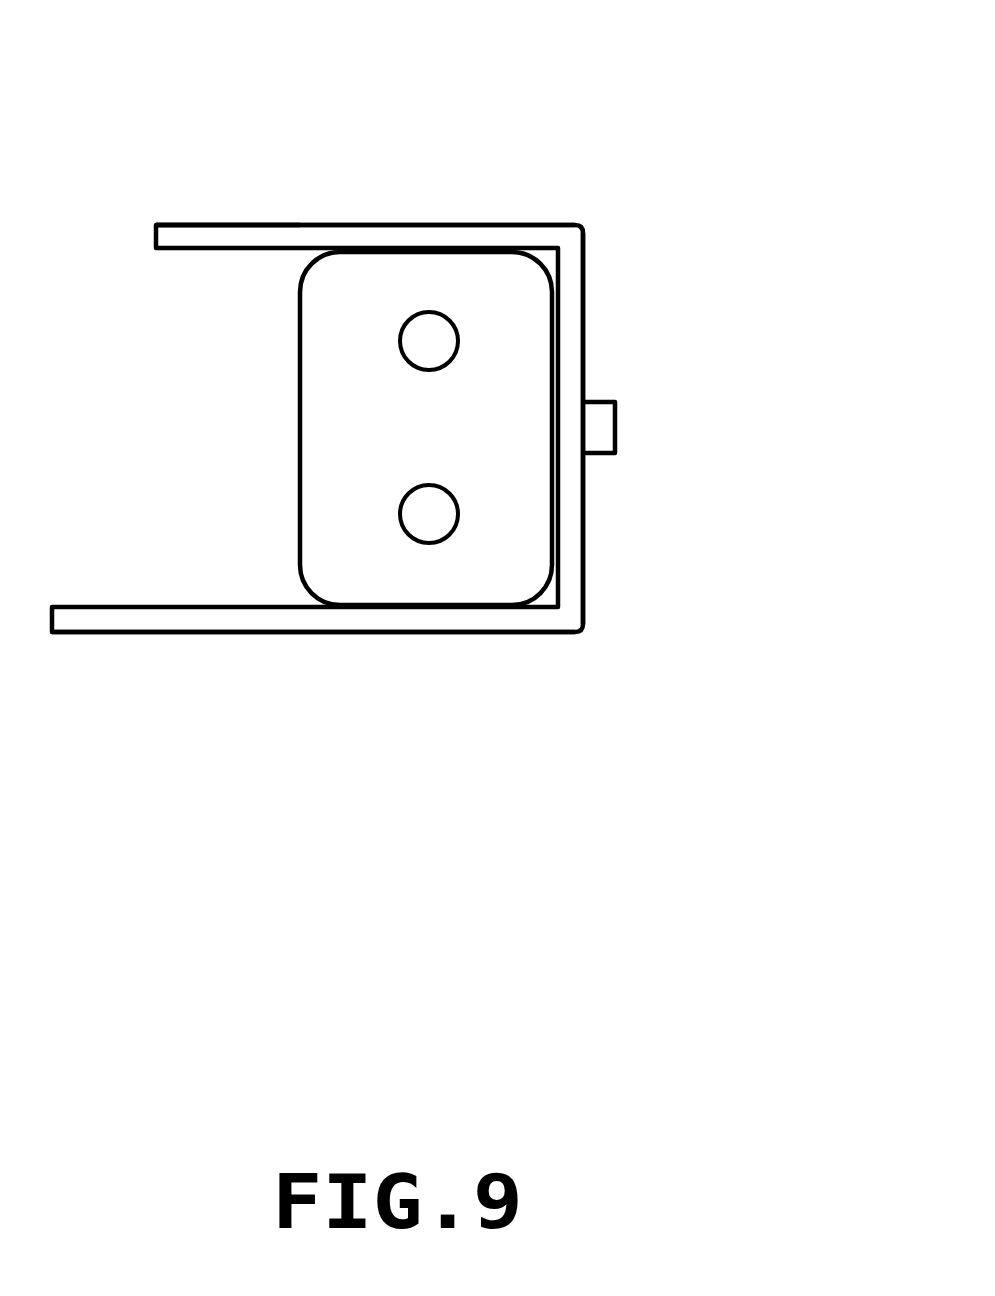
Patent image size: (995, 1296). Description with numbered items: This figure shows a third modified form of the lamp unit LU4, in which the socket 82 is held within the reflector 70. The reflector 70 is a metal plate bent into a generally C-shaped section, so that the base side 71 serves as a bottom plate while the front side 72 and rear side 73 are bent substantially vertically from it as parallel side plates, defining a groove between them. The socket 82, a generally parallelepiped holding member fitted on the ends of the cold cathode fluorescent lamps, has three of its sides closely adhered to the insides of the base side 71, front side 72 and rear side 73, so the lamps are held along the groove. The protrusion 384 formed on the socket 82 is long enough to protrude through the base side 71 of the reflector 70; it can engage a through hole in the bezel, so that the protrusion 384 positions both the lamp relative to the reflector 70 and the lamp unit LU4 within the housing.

The reflector 70 is at (500, 632).
The base side 71 is at (583, 287).
The front side 72 is at (428, 225).
The rear side 73 is at (295, 632).
The socket 82 is at (300, 433).
The protrusion 384 is at (615, 415).
The lamp unit LU4 is at (198, 225).